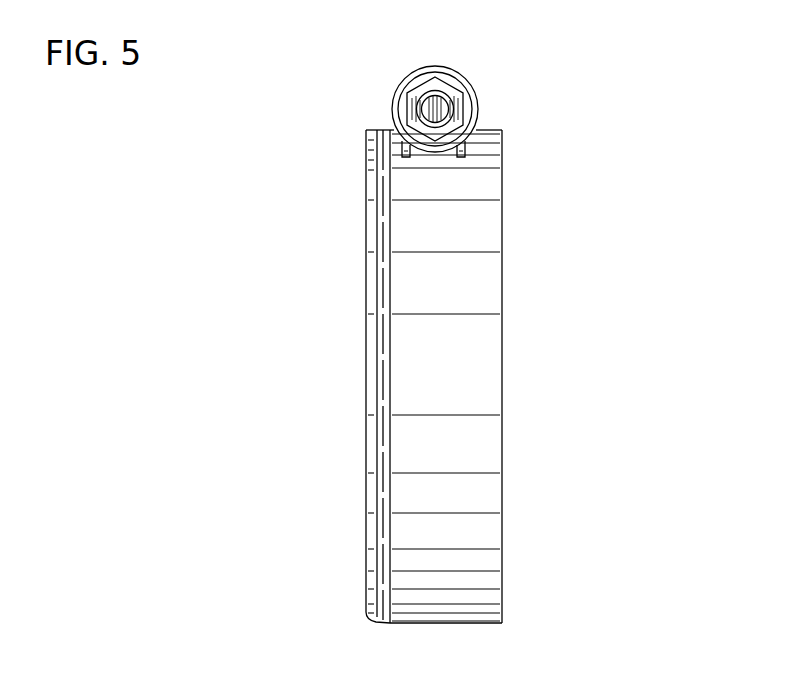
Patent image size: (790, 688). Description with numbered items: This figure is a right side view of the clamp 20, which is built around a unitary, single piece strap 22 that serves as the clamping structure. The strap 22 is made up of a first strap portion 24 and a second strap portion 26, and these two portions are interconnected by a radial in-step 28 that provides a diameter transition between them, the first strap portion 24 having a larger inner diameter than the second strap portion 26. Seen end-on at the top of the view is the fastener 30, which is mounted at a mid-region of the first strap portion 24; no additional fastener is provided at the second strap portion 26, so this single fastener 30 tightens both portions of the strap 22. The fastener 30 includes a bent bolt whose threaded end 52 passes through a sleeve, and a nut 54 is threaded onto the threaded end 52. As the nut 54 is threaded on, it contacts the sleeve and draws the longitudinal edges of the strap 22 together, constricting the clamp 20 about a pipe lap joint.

The clamp 20 is at (568, 89).
The strap 22 is at (512, 301).
The first strap portion 24 is at (473, 616).
The second strap portion 26 is at (369, 618).
The radial in-step 28 is at (382, 130).
The fastener 30 is at (466, 60).
The threaded end 52 is at (442, 110).
The nut 54 is at (455, 90).